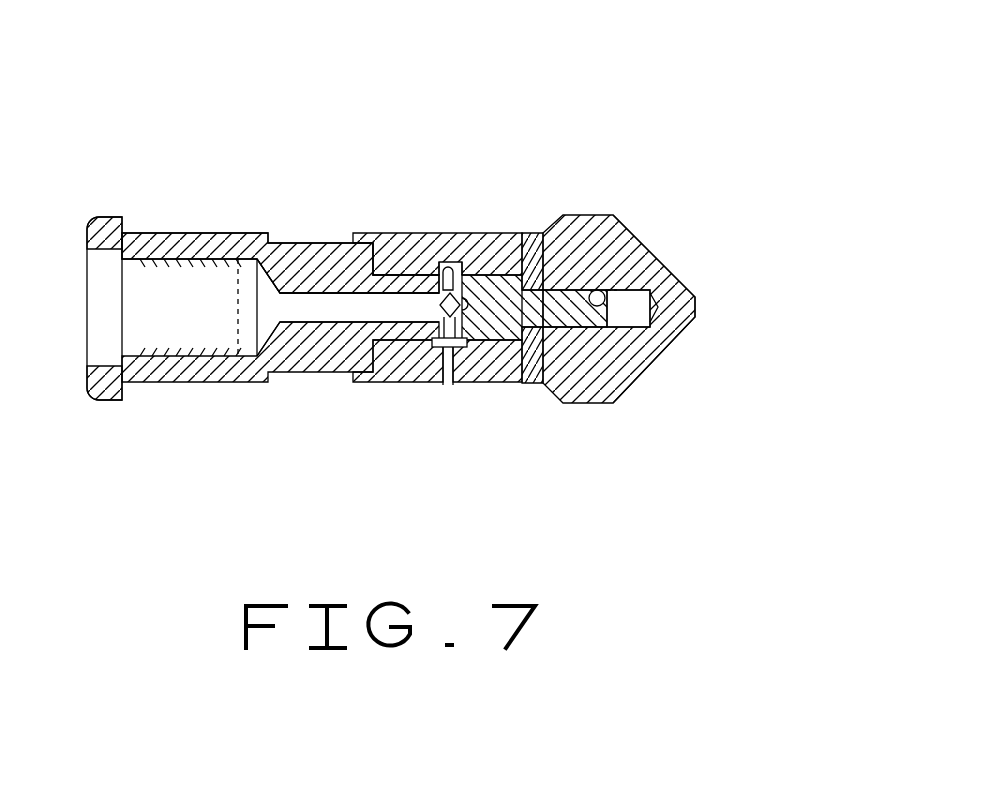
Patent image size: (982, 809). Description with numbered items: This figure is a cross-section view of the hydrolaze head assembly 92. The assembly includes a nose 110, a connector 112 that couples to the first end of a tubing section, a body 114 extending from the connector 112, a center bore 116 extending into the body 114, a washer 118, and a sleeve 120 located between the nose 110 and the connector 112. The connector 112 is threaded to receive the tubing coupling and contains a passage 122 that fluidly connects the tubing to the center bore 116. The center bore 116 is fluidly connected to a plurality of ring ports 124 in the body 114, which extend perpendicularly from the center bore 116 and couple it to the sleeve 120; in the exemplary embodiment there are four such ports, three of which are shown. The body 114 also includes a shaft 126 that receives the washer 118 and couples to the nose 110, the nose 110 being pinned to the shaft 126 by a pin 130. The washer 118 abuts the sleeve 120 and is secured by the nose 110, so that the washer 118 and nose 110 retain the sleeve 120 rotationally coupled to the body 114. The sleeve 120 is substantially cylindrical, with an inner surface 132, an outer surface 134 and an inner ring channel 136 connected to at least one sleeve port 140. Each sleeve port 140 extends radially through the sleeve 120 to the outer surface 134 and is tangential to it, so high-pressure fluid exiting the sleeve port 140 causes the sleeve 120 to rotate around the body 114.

The hydrolaze head assembly 92 is at (425, 92).
The nose 110 is at (592, 222).
The connector 112 is at (248, 233).
The body 114 is at (300, 248).
The center bore 116 is at (328, 310).
The washer 118 is at (537, 233).
The sleeve 120 is at (402, 257).
The passage 122 is at (181, 340).
The ring ports 124 is at (492, 268).
The shaft 126 is at (553, 322).
The pin 130 is at (625, 232).
The inner surface 132 is at (432, 262).
The outer surface 134 is at (393, 380).
The inner ring channel 136 is at (486, 345).
The sleeve port 140 is at (447, 387).